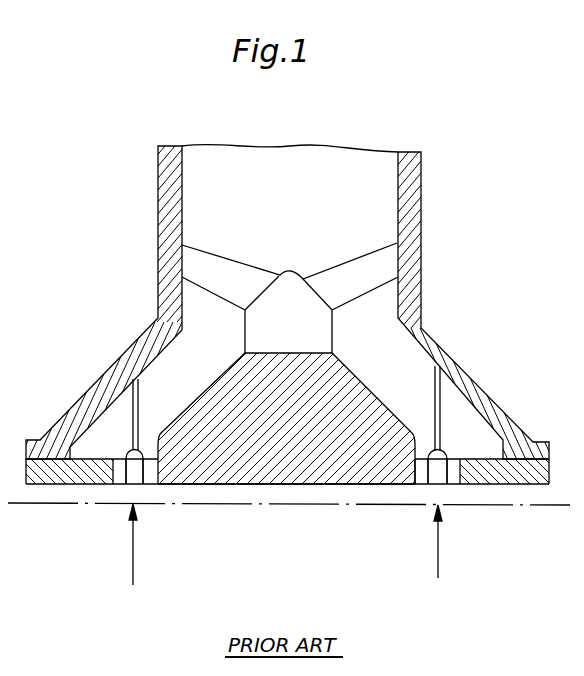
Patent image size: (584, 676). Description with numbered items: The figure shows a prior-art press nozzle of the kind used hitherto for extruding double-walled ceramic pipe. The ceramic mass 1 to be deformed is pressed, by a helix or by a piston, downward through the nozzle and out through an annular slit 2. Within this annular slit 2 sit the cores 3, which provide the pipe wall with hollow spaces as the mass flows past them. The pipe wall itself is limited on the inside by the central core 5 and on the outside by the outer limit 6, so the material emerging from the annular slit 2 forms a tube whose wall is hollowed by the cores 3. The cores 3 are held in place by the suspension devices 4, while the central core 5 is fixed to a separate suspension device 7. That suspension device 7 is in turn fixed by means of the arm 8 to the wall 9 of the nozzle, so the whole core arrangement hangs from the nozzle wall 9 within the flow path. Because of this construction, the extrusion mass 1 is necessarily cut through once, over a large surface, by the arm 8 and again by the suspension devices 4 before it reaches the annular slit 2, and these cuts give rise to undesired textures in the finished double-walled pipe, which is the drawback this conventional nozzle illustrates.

The ceramic mass 1 is at (358, 194).
The annular slit 2 is at (289, 558).
The cores 3 is at (133, 473).
The suspension devices 4 is at (139, 403).
The central core 5 is at (333, 390).
The outer limit 6 is at (108, 477).
The suspension device 7 is at (272, 302).
The arm 8 is at (215, 275).
The wall 9 is at (412, 246).